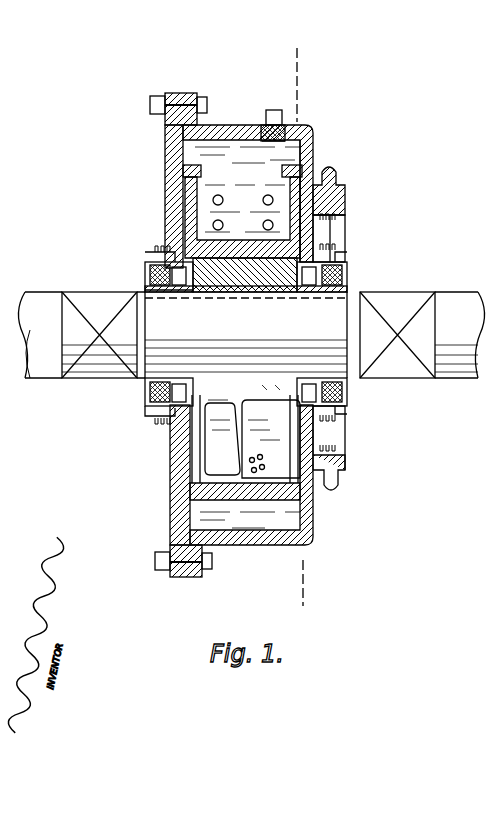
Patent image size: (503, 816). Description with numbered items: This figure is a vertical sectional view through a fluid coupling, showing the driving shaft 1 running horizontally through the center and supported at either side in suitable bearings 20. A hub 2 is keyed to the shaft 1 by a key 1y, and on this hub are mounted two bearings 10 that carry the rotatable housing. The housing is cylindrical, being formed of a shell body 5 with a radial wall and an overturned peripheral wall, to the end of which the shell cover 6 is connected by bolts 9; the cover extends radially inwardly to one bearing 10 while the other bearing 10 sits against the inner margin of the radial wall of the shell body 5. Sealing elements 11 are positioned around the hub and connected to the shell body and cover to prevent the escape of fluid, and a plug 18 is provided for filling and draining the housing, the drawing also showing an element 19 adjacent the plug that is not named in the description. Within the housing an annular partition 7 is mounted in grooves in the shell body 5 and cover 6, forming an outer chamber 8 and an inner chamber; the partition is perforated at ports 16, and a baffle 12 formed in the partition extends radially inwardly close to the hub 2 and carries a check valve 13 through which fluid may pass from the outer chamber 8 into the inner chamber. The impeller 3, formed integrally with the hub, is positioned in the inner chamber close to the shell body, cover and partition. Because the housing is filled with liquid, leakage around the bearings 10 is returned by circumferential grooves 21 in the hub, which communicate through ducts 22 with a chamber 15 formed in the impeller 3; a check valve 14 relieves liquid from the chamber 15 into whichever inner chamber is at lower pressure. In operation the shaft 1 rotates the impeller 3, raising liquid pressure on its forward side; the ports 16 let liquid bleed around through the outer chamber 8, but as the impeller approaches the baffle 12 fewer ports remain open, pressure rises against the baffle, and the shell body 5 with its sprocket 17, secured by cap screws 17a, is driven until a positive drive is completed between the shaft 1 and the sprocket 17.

The shaft 1 is at (42, 300).
The key 1y is at (145, 290).
The hub 2 is at (372, 398).
The impeller 3 is at (318, 492).
The shell body 5 is at (313, 140).
The shell cover 6 is at (165, 160).
The annular partition 7 is at (258, 500).
The outer chamber 8 is at (247, 337).
The bolts 9 is at (152, 103).
The bearing 10 is at (180, 284).
The sealing elements 11 is at (147, 262).
The baffle 12 is at (242, 211).
The check valve 13 is at (270, 196).
The check valve 14 is at (258, 465).
The chamber 15 is at (222, 437).
The perforations 16 is at (290, 500).
The sprocket 17 is at (345, 195).
The cap screws 17a is at (345, 216).
The plug 18 is at (270, 117).
The plug seat 19 is at (272, 141).
The bearings 20 is at (87, 305).
The circumferential grooves 21 is at (287, 282).
The duct 22 is at (178, 438).